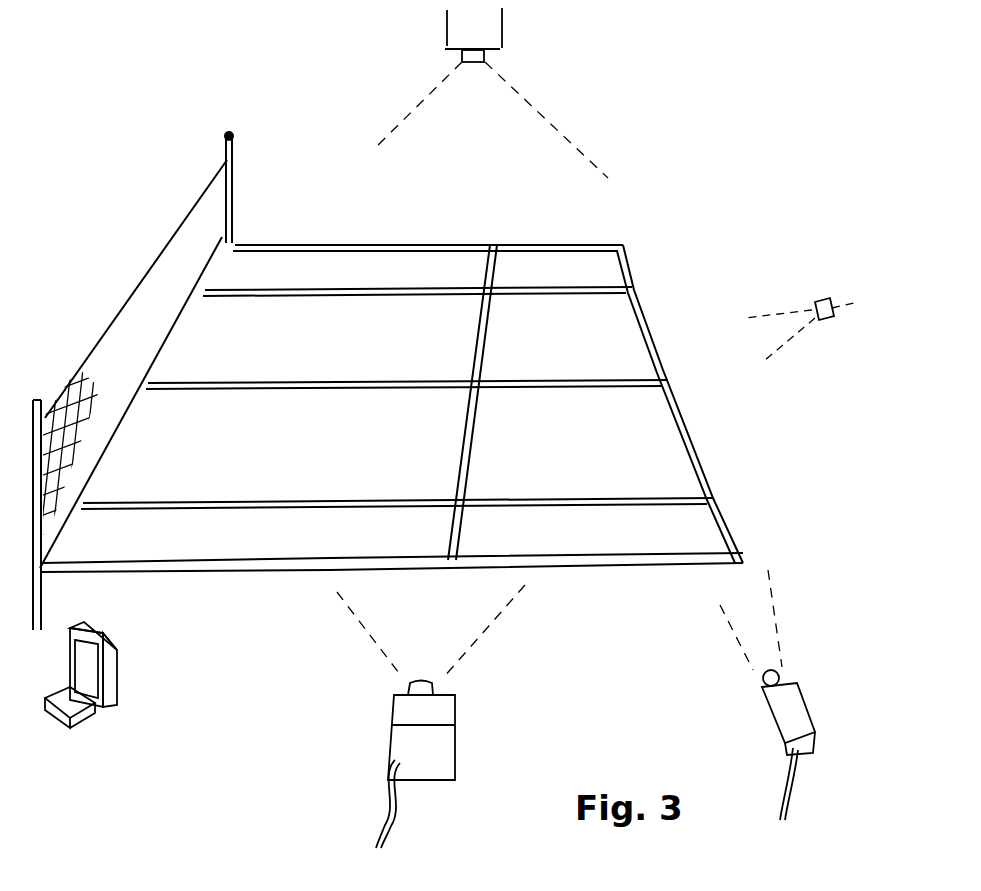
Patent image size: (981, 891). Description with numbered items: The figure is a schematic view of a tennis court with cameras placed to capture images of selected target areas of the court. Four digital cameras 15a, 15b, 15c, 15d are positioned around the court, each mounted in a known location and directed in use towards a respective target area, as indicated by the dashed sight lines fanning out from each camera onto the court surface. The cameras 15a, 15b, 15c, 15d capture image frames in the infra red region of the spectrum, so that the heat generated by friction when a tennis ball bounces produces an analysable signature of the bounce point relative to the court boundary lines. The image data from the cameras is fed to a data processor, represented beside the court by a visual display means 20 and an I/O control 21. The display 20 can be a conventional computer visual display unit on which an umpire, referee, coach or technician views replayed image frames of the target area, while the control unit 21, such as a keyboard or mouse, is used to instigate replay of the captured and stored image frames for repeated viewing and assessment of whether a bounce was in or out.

The digital camera 15a is at (430, 750).
The digital camera 15b is at (790, 705).
The digital camera 15c is at (826, 292).
The digital camera 15d is at (483, 30).
The visual display means 20 is at (122, 655).
The I/O control 21 is at (76, 728).